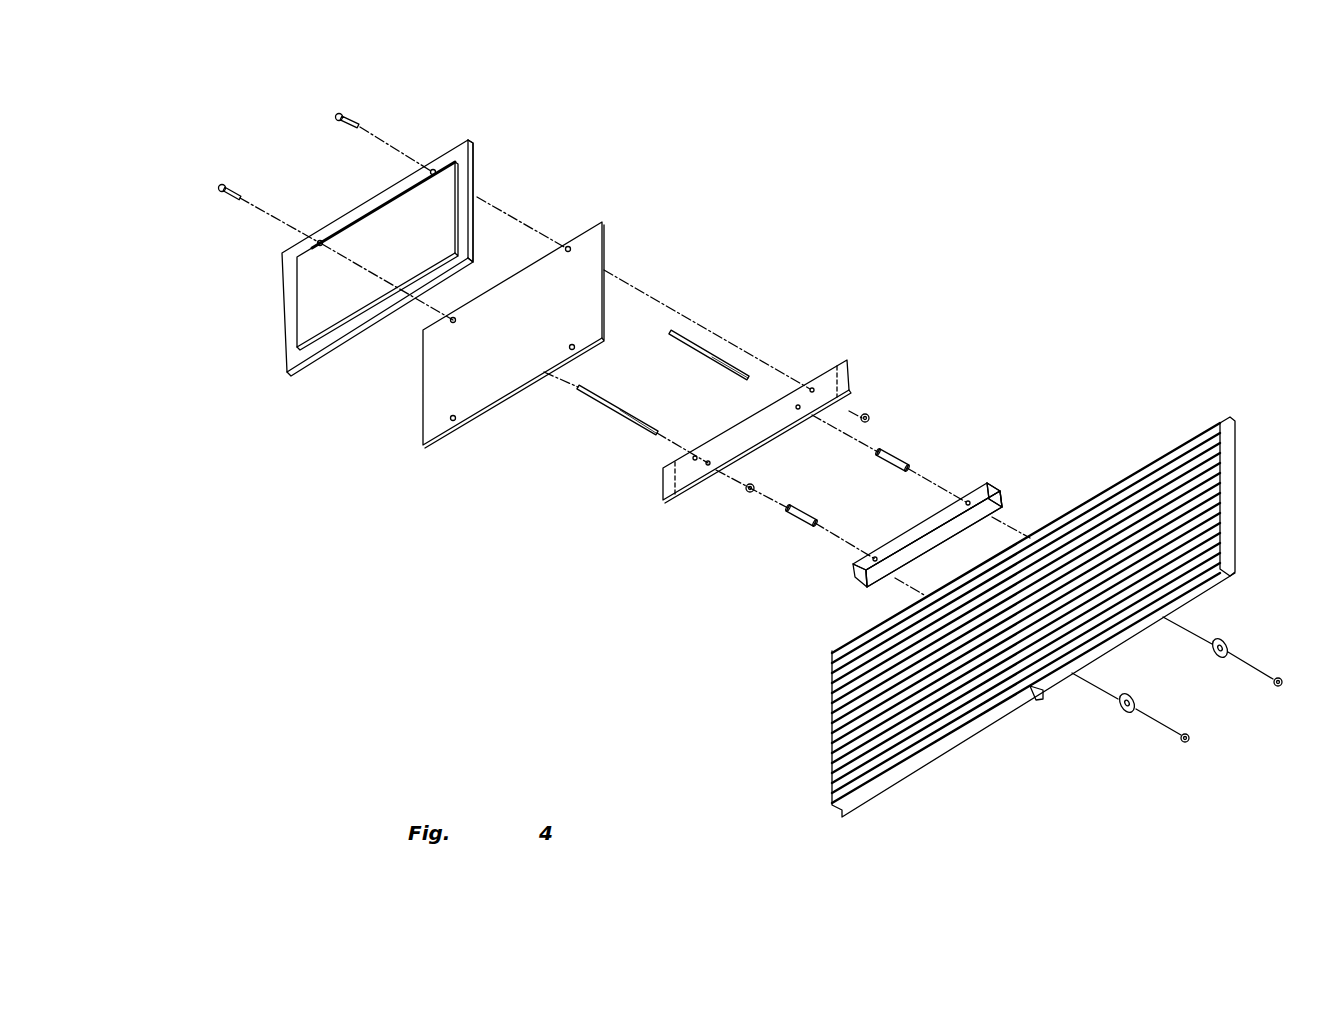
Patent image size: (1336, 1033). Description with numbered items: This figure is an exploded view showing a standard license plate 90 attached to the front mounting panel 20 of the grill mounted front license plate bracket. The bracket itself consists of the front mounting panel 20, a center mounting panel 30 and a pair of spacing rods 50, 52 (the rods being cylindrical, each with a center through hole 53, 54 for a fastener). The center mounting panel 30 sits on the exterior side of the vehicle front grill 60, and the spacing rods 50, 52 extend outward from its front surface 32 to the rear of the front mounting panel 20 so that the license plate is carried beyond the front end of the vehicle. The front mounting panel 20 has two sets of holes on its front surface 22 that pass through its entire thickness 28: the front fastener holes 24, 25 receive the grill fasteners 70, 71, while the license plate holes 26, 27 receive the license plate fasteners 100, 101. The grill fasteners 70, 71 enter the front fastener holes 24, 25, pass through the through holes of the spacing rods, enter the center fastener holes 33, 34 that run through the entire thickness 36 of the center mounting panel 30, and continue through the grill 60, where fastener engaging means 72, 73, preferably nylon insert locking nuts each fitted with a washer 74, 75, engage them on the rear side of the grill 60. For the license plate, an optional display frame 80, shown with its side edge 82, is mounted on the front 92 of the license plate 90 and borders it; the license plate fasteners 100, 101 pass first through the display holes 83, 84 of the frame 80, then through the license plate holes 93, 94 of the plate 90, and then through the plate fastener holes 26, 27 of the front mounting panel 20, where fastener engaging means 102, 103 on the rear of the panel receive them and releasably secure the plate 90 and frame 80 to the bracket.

The front mounting panel 20 is at (850, 335).
The front surface 22 is at (747, 431).
The front fastener hole 24 is at (708, 466).
The front fastener hole 25 is at (798, 410).
The license plate hole 26 is at (693, 459).
The license plate hole 27 is at (812, 387).
The thickness 28 is at (850, 370).
The center mounting panel 30 is at (924, 536).
The front surface 32 is at (920, 527).
The center fastener hole 33 is at (969, 500).
The center fastener hole 34 is at (875, 556).
The thickness 36 is at (1003, 492).
The spacing rod 50 is at (806, 523).
The center through hole 52 is at (880, 450).
The center through hole 53 is at (902, 462).
The spacer bore 54 is at (787, 510).
The front grill 60 is at (1167, 482).
The grill fastener 70 is at (618, 420).
The grill fastener 71 is at (712, 358).
The fastener engaging means 72 is at (1184, 743).
The fastener engaging means 73 is at (1280, 690).
The washer 74 is at (1118, 709).
The washer 75 is at (1228, 638).
The license plate display frame 80 is at (286, 333).
The frame side edge 82 is at (475, 168).
The display hole 83 is at (434, 169).
The display hole 84 is at (317, 244).
The license plate 90 is at (423, 402).
The front 92 is at (490, 384).
The license plate hole 93 is at (571, 248).
The license plate hole 94 is at (452, 323).
The license plate fastener 100 is at (232, 182).
The license plate fastener 101 is at (337, 125).
The fastener engaging means 102 is at (746, 492).
The fastener engaging means 103 is at (869, 416).